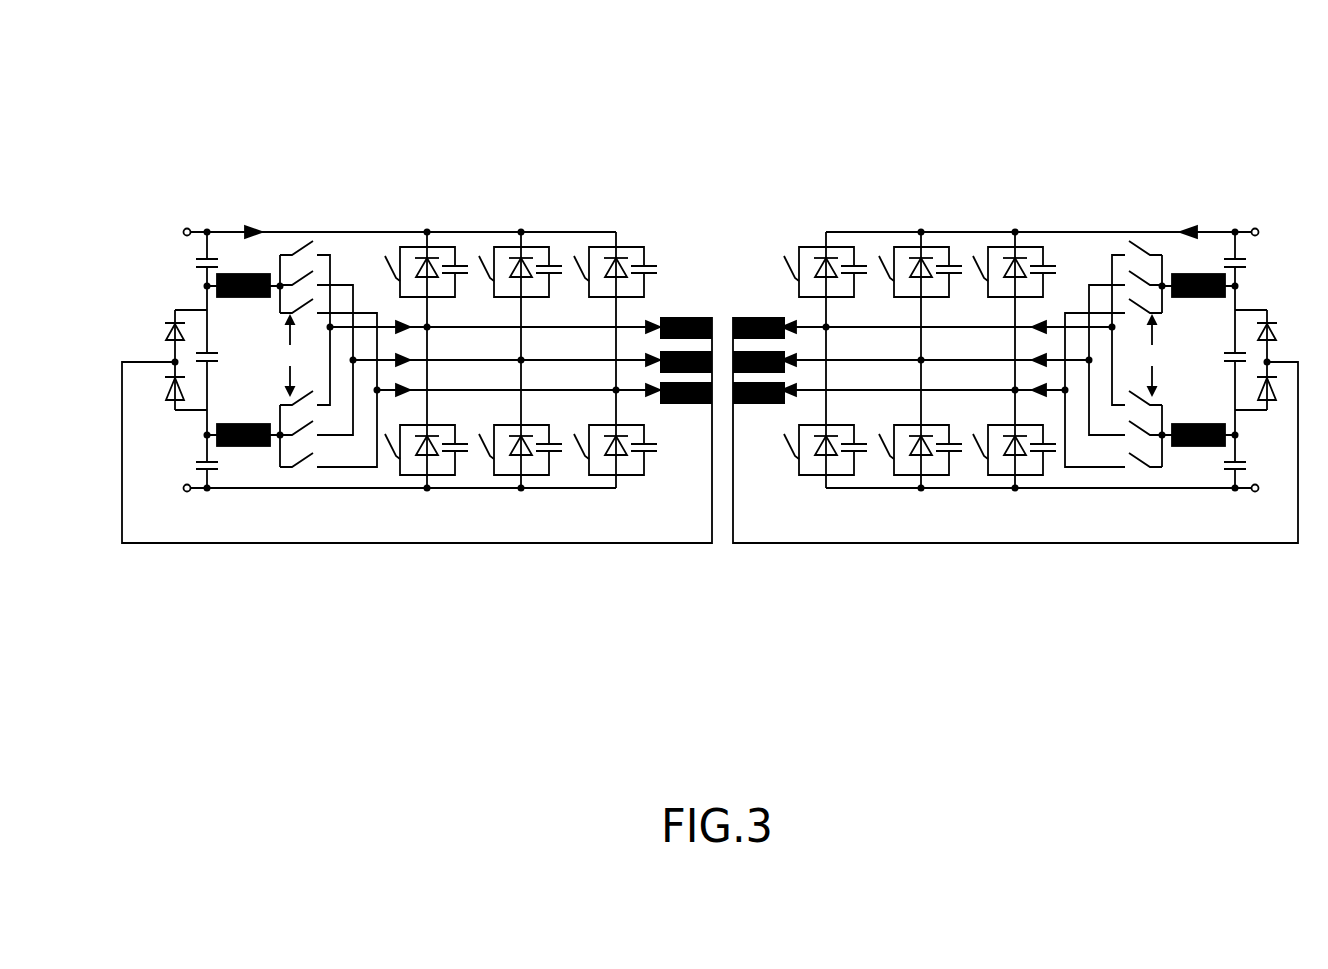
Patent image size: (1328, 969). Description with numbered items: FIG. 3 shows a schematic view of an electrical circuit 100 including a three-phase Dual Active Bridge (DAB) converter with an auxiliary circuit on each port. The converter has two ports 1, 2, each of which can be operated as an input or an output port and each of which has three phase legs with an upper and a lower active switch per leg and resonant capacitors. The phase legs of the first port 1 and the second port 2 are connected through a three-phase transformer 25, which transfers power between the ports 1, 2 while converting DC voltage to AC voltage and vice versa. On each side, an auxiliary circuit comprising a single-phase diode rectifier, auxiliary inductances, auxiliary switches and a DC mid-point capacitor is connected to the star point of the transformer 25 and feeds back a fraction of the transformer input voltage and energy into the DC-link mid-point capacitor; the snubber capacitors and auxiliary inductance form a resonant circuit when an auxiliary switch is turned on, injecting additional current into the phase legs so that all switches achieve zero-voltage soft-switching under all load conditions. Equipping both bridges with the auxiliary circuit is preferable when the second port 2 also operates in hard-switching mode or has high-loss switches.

The electrical circuit 100 is at (148, 125).
The port 1 is at (215, 125).
The port 2 is at (825, 125).
The transformer 25 is at (729, 311).